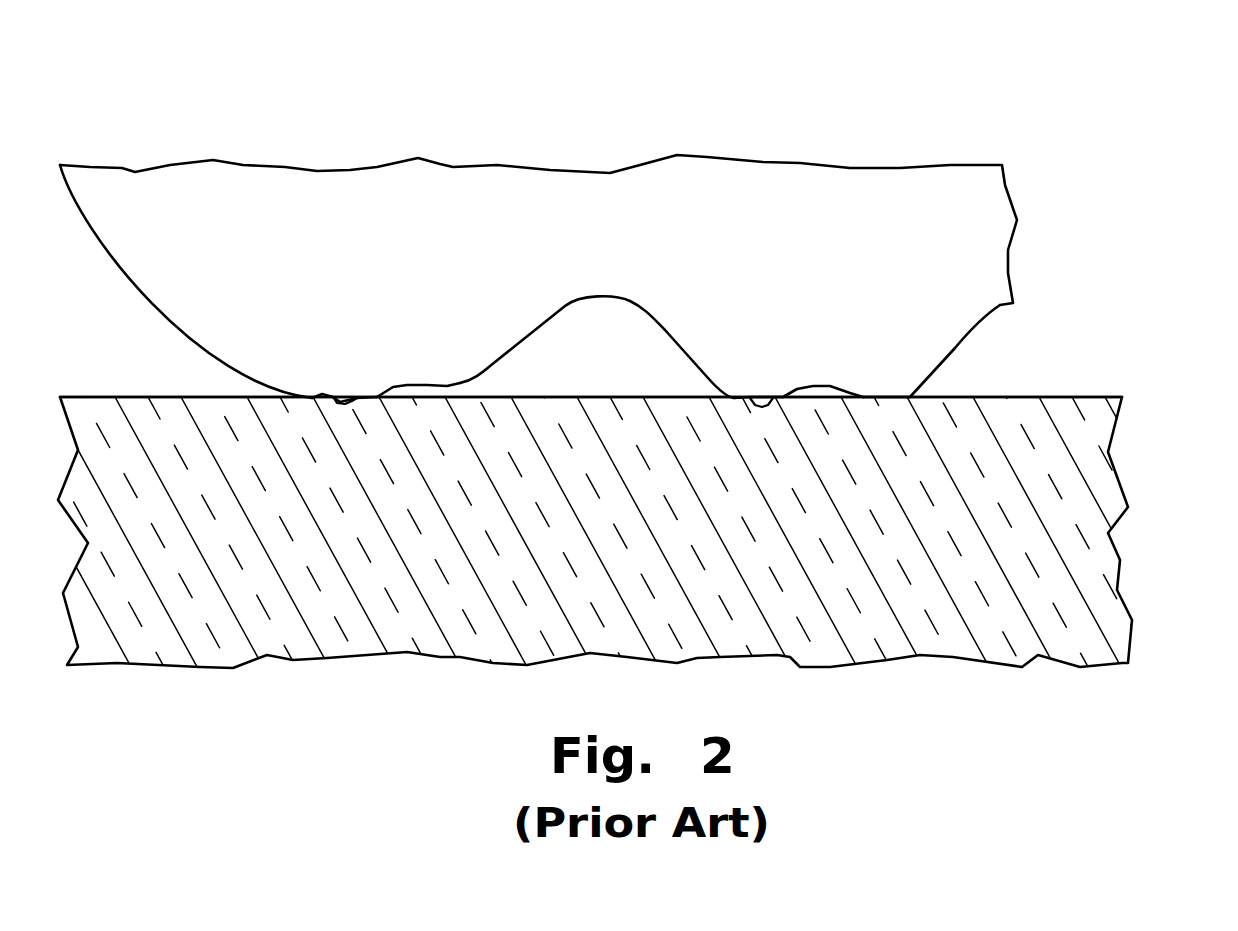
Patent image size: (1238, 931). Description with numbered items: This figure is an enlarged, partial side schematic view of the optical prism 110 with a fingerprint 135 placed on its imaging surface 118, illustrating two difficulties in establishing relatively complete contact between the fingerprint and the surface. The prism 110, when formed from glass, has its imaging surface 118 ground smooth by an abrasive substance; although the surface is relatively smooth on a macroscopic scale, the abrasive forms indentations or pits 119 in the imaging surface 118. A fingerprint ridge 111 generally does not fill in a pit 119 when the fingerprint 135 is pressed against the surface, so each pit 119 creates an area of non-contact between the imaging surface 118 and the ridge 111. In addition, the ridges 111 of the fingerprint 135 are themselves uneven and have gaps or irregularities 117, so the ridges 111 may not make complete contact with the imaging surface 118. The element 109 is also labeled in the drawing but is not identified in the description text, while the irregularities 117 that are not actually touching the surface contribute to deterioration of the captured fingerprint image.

The fingerprint 135 is at (648, 102).
The solder bump 109 is at (597, 261).
The prism 110 is at (619, 541).
The fingerprint ridge 111 is at (531, 248).
The irregularity 117 is at (647, 246).
The imaging surface 118 is at (591, 347).
The pit 119 is at (549, 447).